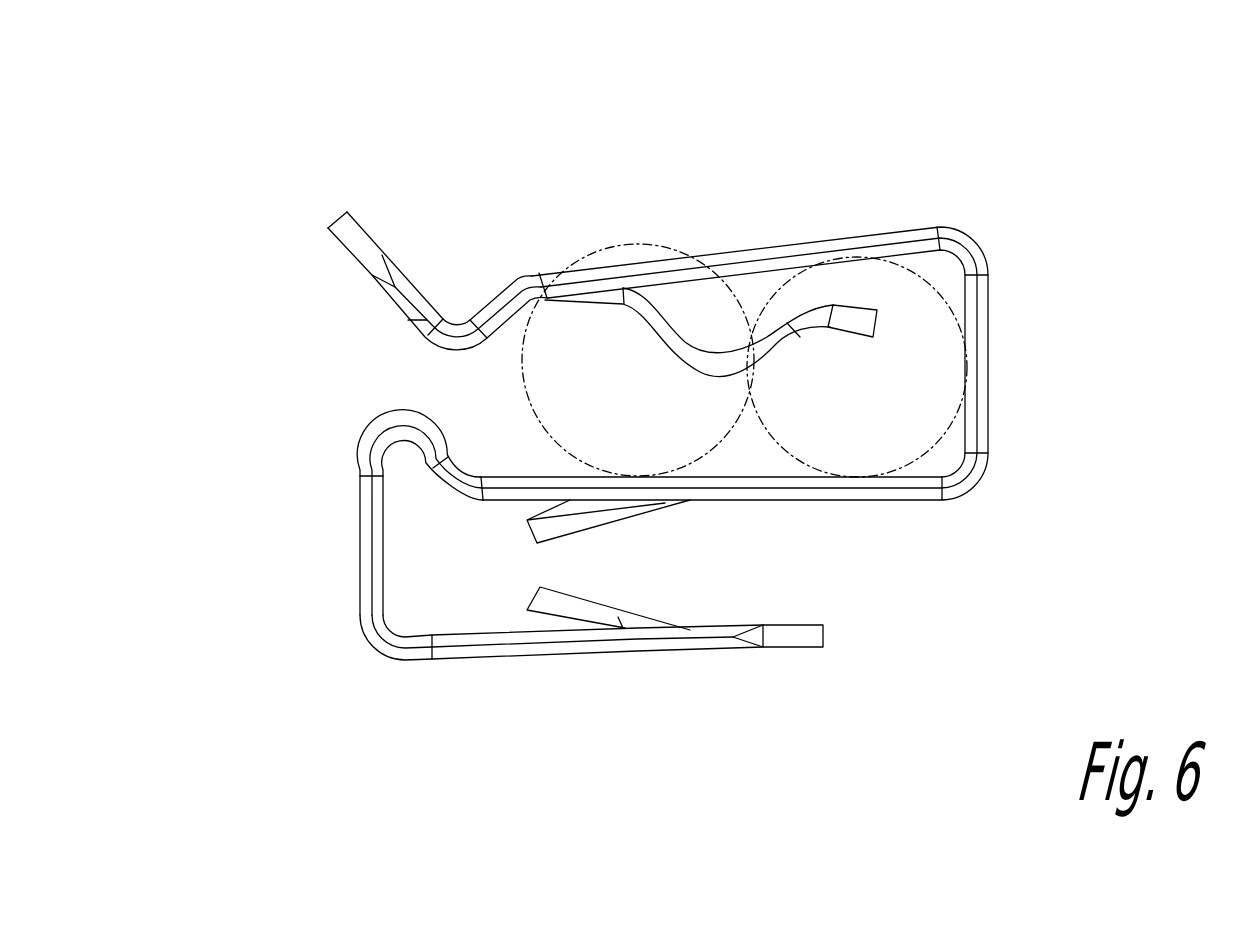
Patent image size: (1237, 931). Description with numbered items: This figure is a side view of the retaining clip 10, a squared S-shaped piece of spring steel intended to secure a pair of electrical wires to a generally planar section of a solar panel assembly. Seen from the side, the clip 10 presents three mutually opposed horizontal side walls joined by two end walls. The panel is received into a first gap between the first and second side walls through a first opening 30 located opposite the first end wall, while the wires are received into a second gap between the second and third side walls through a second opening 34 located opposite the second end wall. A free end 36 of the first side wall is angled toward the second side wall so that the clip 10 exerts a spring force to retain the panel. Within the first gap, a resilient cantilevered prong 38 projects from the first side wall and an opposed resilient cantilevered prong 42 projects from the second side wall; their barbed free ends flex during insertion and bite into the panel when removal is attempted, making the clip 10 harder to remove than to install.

The retaining clip 10 is at (675, 104).
The first opening 30 is at (772, 553).
The second opening 34 is at (417, 385).
The free end 36 is at (832, 634).
The resilient cantilevered prong 38 is at (573, 607).
The resilient cantilevered prong 42 is at (573, 520).